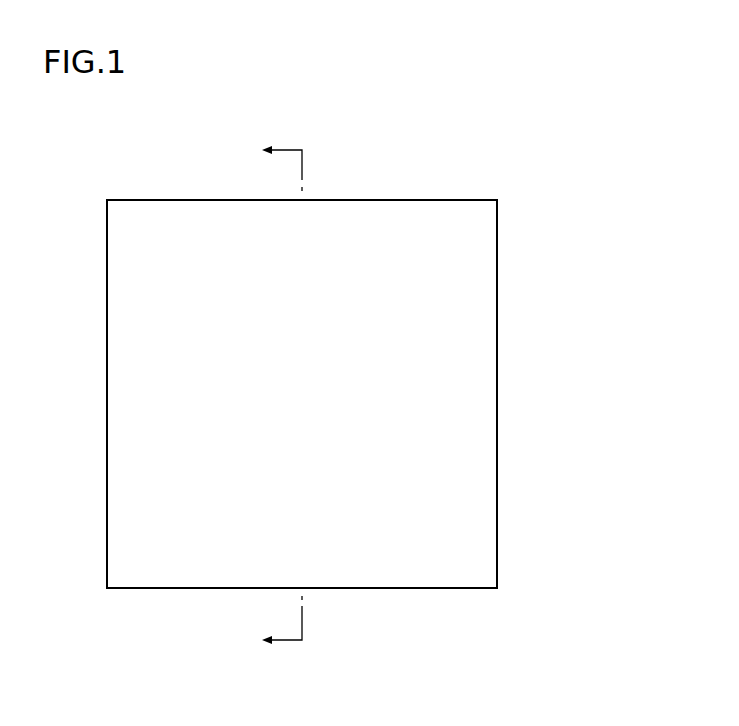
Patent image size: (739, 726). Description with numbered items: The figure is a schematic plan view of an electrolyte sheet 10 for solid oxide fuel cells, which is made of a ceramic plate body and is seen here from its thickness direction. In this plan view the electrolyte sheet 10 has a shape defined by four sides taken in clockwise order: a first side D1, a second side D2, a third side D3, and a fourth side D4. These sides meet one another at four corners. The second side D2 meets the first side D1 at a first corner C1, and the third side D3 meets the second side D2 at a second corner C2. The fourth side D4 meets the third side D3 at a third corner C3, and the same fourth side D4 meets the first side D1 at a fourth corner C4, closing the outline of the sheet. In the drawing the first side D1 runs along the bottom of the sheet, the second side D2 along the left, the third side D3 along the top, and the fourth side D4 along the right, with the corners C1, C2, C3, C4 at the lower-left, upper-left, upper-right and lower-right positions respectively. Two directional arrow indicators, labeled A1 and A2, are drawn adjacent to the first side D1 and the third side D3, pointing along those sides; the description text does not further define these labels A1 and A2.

The electrolyte sheet 10 is at (461, 150).
The first corner C1 is at (107, 588).
The second corner C2 is at (107, 200).
The third corner C3 is at (497, 200).
The fourth corner C4 is at (497, 588).
The first side D1 is at (210, 588).
The second side D2 is at (107, 408).
The third side D3 is at (212, 200).
The fourth side D4 is at (497, 380).
The direction A1 is at (298, 636).
The direction A2 is at (298, 151).